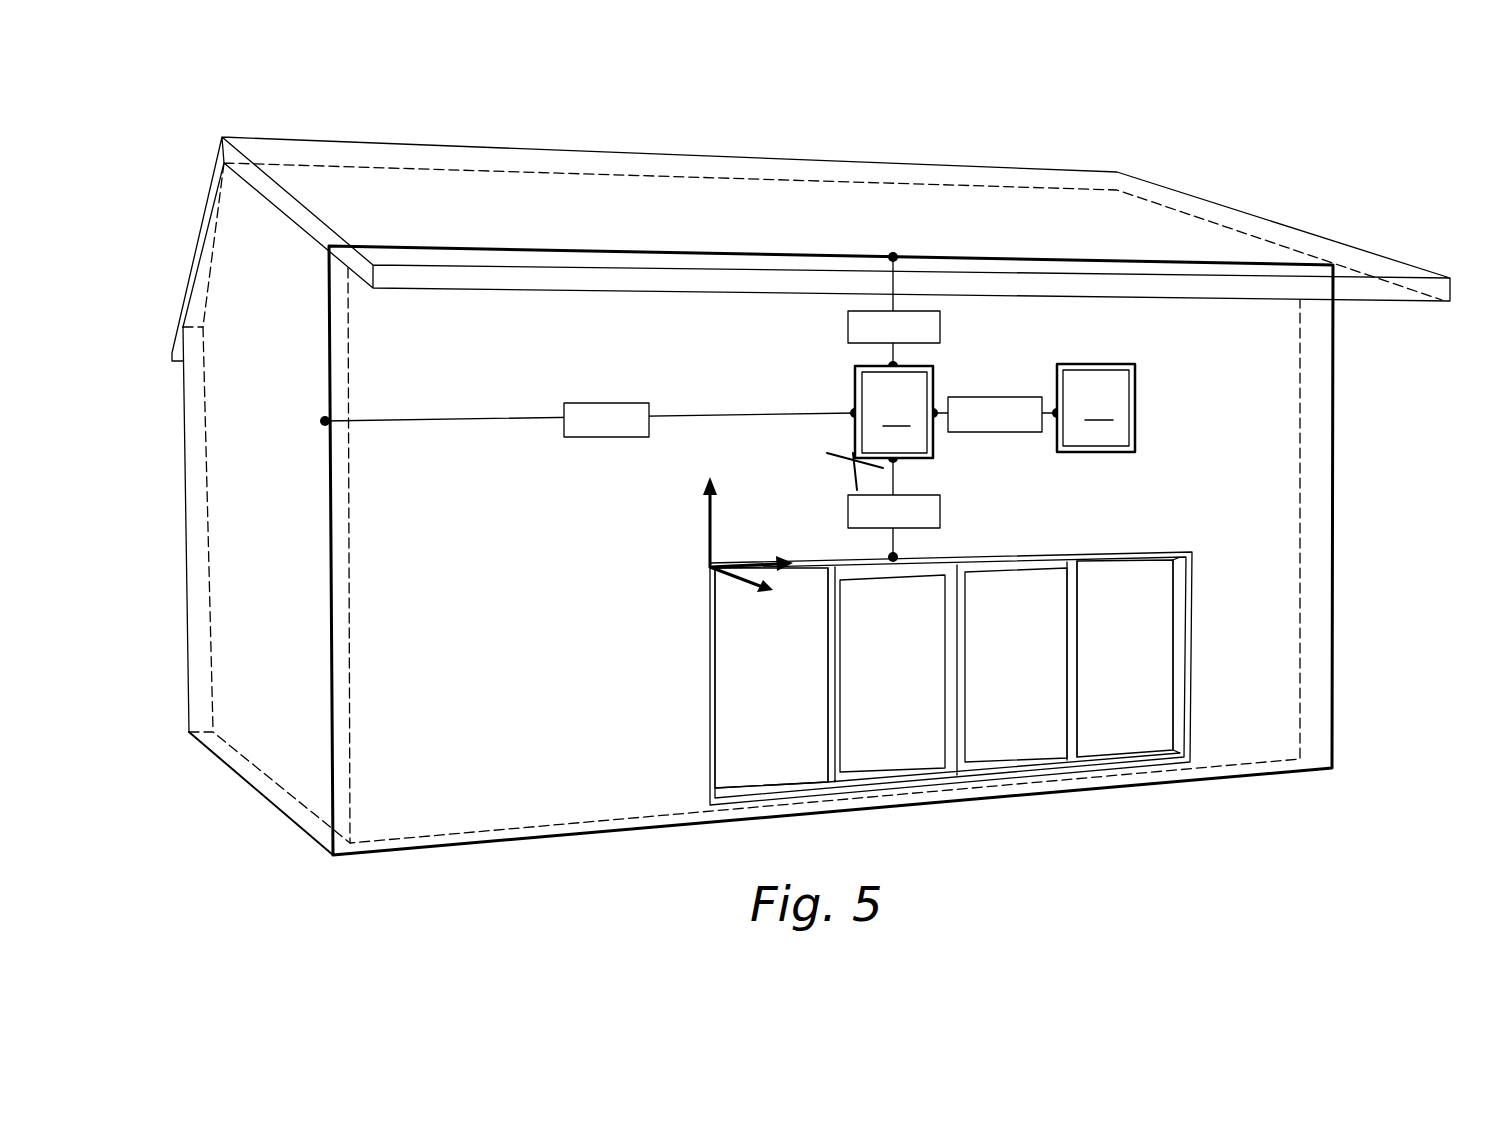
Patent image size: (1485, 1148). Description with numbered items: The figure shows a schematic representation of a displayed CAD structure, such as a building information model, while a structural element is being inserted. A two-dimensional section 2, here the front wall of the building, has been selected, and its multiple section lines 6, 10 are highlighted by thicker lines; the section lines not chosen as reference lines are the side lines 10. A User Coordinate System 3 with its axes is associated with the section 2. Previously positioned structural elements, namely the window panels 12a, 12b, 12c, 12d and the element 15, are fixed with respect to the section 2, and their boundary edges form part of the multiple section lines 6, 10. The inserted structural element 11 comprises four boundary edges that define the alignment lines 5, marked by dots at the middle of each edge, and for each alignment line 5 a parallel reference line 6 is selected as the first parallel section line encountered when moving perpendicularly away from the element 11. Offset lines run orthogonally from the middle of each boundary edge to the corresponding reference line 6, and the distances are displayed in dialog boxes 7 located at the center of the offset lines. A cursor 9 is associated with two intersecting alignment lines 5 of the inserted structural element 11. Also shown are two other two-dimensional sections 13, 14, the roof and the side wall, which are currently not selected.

The 2D section 2 is at (1270, 520).
The User Coordinate System 3 is at (706, 567).
The alignment lines 5 is at (855, 385).
The reference lines 6 is at (688, 255).
The dialog boxes 7 is at (606, 402).
The cursor 9 is at (855, 462).
The side lines 10 is at (1096, 364).
The inserted structural element 11 is at (894, 412).
The sub-object fixed with respect to the 2D section 12a is at (752, 692).
The sub-object fixed with respect to the 2D section 12b is at (874, 684).
The sub-object fixed with respect to the 2D section 12c is at (988, 677).
The sub-object fixed with respect to the 2D section 12d is at (1102, 670).
The other non-selected 2D section 13 is at (452, 200).
The other non-selected 2D section 14 is at (254, 442).
The sub-object fixed with respect to the 2D section 15 is at (1096, 408).